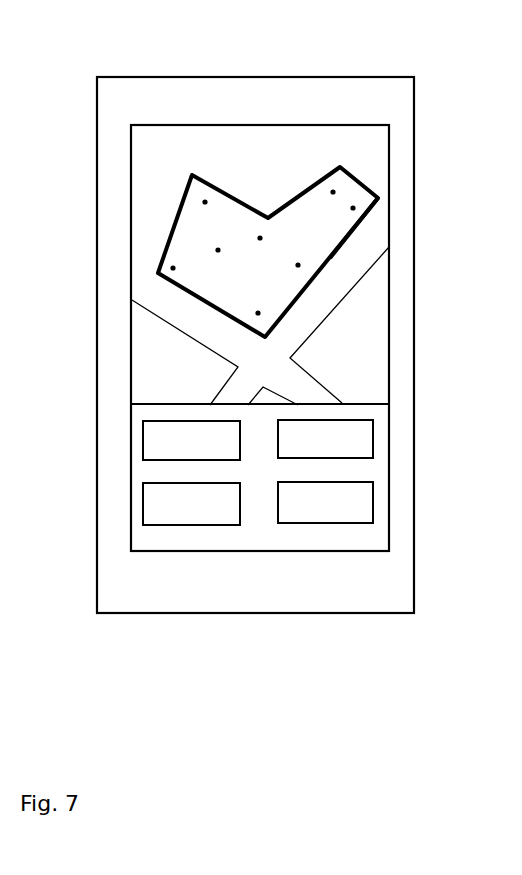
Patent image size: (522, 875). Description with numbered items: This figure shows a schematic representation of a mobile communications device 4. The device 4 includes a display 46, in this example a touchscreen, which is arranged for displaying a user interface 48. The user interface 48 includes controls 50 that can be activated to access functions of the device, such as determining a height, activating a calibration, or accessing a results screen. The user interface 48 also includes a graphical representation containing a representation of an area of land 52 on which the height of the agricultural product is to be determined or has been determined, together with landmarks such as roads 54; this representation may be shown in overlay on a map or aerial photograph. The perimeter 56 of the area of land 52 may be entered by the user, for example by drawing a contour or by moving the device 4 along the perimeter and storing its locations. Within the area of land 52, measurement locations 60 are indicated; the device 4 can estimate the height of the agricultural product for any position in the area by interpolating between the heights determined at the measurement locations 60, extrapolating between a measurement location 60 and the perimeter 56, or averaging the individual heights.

The mobile communications device 4 is at (128, 615).
The display 46 is at (356, 122).
The user interface 48 is at (392, 149).
The controls 50 is at (198, 452).
The area of land 52 is at (258, 281).
The roads 54 is at (220, 345).
The perimeter 56 is at (362, 222).
The measurement locations 60 is at (260, 236).